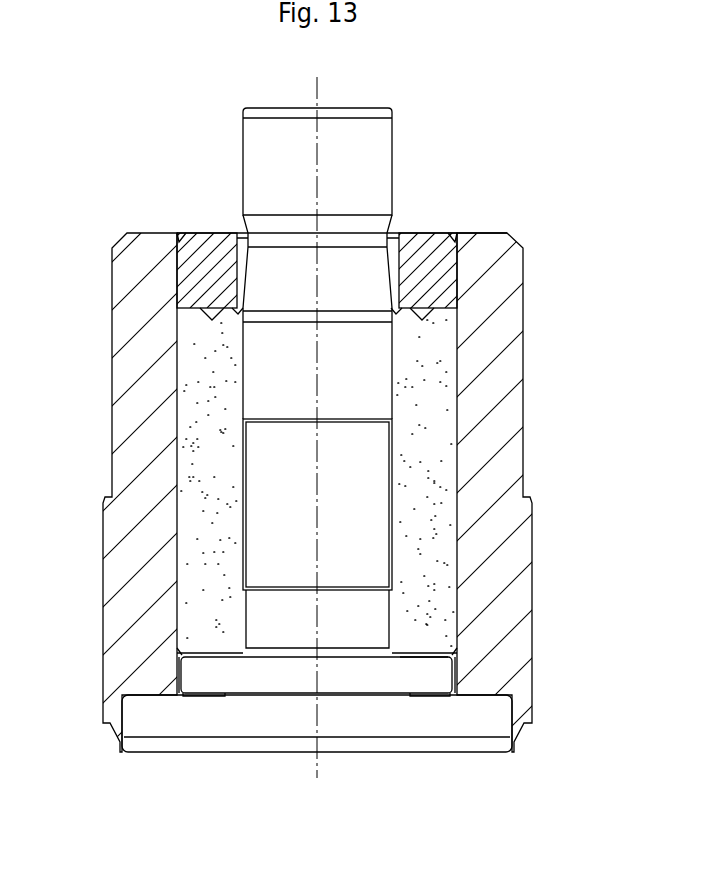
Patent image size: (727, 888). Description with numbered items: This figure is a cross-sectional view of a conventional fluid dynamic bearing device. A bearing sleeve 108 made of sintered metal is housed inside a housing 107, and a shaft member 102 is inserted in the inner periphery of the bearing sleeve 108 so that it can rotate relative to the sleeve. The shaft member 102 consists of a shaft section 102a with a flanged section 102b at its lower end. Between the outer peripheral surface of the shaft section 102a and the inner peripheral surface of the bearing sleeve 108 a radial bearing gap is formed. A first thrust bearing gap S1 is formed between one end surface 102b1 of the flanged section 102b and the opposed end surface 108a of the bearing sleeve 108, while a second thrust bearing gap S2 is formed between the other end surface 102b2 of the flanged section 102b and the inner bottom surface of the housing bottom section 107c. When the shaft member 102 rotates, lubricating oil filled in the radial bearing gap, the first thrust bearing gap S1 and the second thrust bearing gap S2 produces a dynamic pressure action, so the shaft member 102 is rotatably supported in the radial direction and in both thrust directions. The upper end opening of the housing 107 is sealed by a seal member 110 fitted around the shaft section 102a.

The shaft member 102 is at (284, 135).
The shaft section 102a is at (365, 355).
The flanged section 102b is at (420, 678).
The one end surface of the flanged section 102b1 is at (430, 652).
The other end surface of the flanged section 102b2 is at (445, 706).
The housing 107 is at (493, 440).
The housing bottom section 107c is at (166, 722).
The bearing sleeve 108 is at (422, 552).
The end surface of the bearing sleeve 108a is at (194, 674).
The seal member 110 is at (418, 240).
The first thrust bearing gap S1 is at (233, 670).
The second thrust bearing gap S2 is at (264, 688).